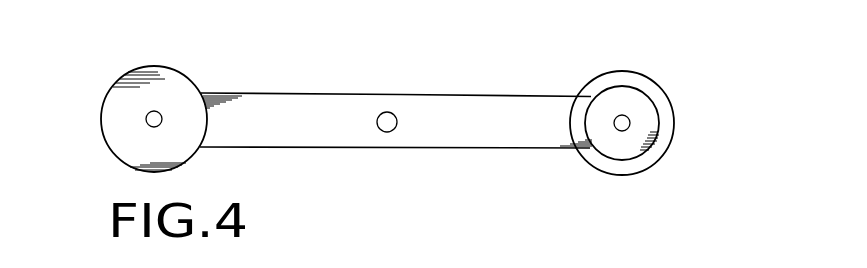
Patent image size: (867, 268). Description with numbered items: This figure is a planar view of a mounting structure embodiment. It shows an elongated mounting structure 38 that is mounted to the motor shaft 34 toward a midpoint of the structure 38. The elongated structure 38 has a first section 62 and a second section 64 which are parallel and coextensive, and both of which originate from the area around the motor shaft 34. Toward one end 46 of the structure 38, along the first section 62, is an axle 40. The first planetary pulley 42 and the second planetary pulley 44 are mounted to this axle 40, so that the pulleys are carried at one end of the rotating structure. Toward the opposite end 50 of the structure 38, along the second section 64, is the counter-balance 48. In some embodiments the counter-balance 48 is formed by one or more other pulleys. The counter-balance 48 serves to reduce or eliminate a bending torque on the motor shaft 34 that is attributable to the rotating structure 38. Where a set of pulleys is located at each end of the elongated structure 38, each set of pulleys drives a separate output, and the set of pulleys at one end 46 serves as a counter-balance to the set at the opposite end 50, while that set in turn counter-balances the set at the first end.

The motor shaft 34 is at (388, 112).
The elongated mounting structure 38 is at (458, 94).
The axle 40 is at (627, 118).
The first planetary pulley 42 is at (628, 70).
The second planetary pulley 44 is at (650, 148).
The one end 46 is at (716, 80).
The counter-balance 48 is at (176, 67).
The opposite end 50 is at (96, 62).
The first section 62 is at (533, 96).
The second section 64 is at (272, 93).